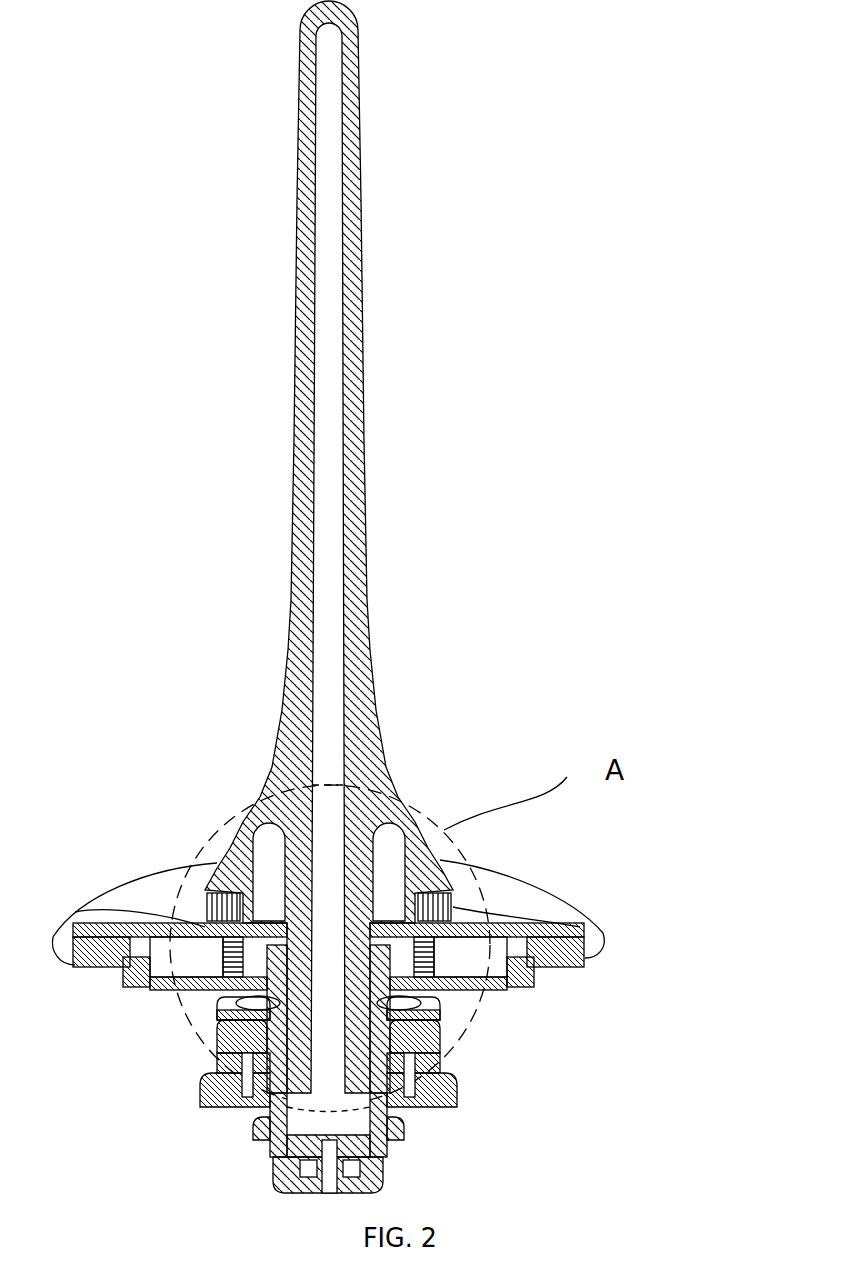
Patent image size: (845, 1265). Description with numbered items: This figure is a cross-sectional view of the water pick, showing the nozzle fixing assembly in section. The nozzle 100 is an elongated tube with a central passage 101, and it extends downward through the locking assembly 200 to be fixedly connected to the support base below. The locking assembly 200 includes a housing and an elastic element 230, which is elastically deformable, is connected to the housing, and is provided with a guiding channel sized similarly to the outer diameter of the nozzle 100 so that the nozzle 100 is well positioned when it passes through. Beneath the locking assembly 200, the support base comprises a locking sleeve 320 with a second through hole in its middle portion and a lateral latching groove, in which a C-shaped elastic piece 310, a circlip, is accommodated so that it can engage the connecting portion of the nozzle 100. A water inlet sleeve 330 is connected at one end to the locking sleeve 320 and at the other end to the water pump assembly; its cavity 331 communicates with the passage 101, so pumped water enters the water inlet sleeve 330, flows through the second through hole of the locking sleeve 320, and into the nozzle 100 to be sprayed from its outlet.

The nozzle 100 is at (378, 483).
The passage 101 is at (328, 746).
The locking assembly 200 is at (623, 930).
The elastic element 230 is at (430, 962).
The elastic piece 310 is at (250, 1005).
The locking sleeve 320 is at (437, 1040).
The water inlet sleeve 330 is at (453, 1100).
The cavity 331 is at (303, 1118).